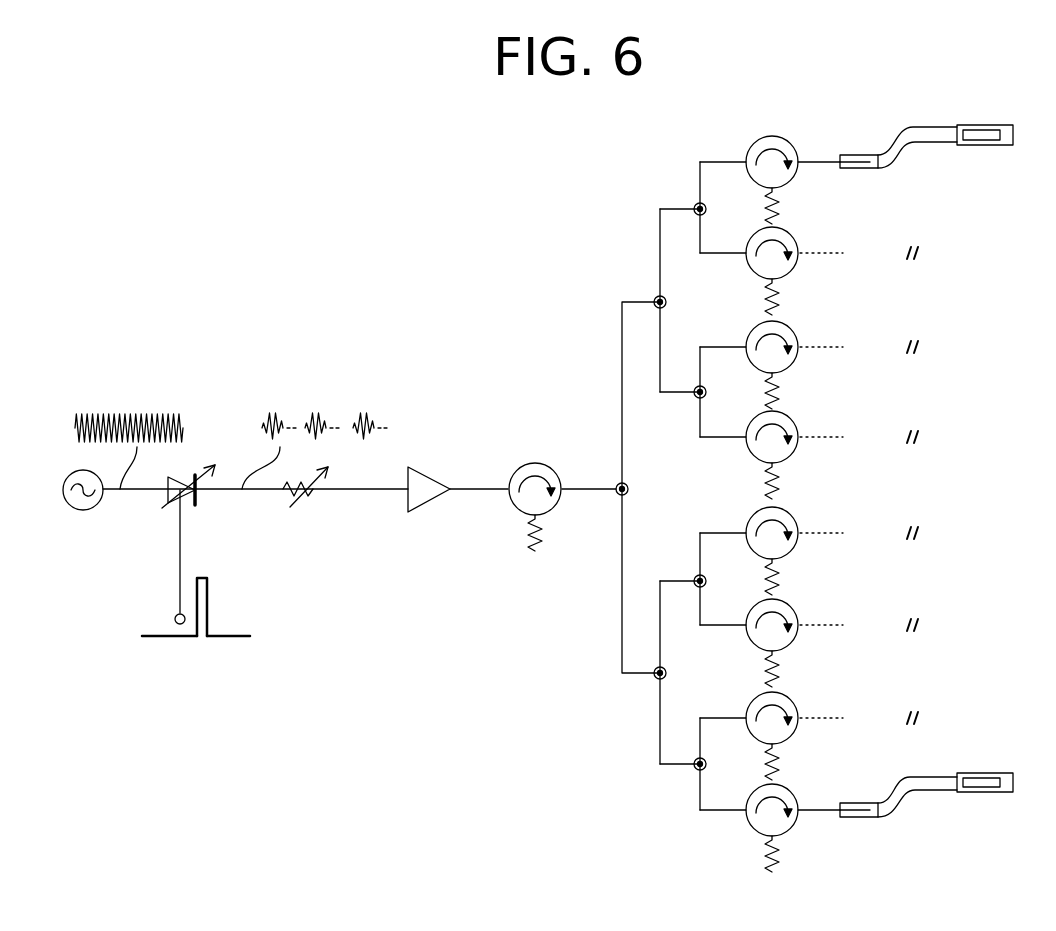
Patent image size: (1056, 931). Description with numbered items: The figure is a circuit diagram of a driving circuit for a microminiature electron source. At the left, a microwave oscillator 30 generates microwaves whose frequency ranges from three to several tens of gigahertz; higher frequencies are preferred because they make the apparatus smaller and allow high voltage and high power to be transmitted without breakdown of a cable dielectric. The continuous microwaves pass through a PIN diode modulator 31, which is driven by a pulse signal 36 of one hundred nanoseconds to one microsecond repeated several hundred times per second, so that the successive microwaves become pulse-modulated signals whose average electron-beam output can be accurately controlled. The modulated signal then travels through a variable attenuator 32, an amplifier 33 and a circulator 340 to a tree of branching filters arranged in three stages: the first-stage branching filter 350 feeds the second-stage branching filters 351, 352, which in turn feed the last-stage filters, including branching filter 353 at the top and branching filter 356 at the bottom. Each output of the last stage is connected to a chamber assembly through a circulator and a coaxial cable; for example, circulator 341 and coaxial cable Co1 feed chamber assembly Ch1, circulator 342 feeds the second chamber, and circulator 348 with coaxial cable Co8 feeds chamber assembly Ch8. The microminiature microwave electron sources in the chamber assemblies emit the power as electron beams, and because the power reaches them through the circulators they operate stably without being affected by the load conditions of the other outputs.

The microwave oscillator 30 is at (73, 511).
The PIN diode modulator 31 is at (181, 477).
The variable attenuator 32 is at (303, 507).
The amplifier 33 is at (428, 500).
The pulse signal 36 is at (207, 600).
The circulator 340 is at (523, 462).
The circulator 341 is at (795, 180).
The circulator 342 is at (795, 270).
The circulator 348 is at (795, 825).
The branching filter 350 is at (616, 487).
The branching filter 351 is at (655, 298).
The branching filter 352 is at (658, 680).
The branching filter 353 is at (695, 205).
The branching filter 356 is at (697, 770).
The coaxial cable Co1 is at (885, 150).
The chamber assembly Ch1 is at (973, 147).
The coaxial cable Co8 is at (902, 795).
The chamber assembly Ch8 is at (1008, 750).